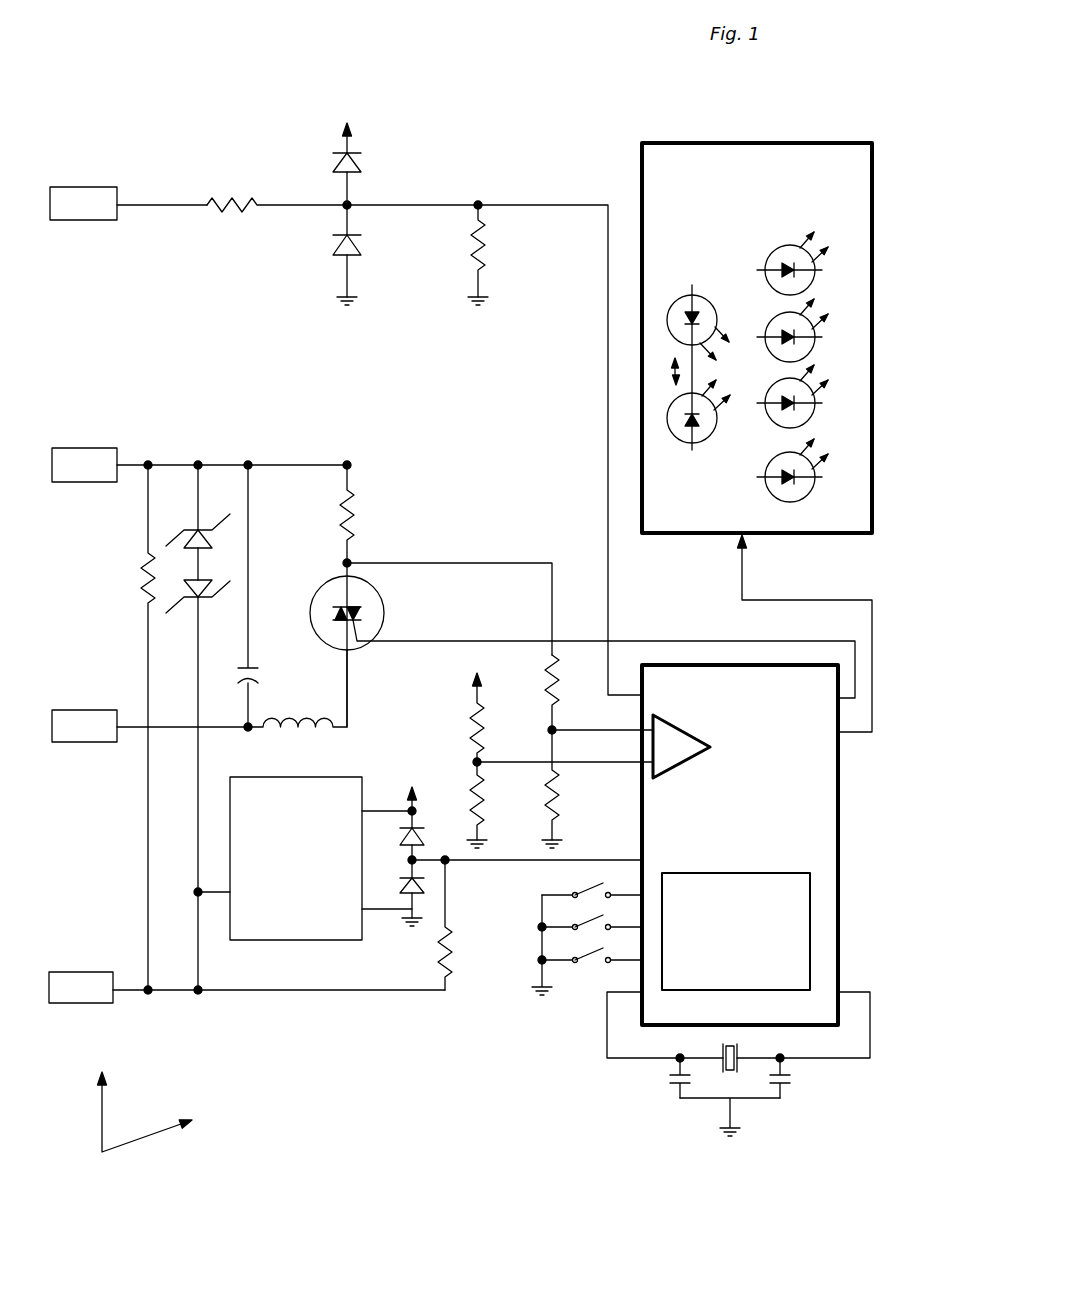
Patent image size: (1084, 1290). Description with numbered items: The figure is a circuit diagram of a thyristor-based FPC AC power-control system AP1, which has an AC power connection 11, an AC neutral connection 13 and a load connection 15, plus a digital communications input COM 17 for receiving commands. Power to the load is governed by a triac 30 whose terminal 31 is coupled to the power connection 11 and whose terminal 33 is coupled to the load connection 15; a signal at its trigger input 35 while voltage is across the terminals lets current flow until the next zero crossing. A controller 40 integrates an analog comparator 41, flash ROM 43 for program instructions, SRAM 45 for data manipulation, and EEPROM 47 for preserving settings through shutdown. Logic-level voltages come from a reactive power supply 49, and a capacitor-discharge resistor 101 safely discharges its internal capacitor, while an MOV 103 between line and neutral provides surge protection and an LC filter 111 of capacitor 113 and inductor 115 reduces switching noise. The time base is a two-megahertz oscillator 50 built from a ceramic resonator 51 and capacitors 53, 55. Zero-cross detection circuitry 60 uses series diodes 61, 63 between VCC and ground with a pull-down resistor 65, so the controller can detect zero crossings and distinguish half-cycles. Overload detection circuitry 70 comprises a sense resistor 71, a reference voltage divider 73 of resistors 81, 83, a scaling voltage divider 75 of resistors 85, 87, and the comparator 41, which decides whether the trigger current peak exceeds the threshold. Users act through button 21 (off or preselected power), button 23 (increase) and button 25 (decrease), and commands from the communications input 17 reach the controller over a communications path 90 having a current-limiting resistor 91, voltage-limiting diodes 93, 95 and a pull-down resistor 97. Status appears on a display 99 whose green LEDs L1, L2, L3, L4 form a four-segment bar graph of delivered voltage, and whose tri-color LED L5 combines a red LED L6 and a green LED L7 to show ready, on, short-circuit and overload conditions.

The digital communications input COM 17 is at (95, 216).
The communications path 90 is at (194, 225).
The current limiting resistor 91 is at (240, 192).
The voltage-limiting diode 93 is at (333, 249).
The voltage-limiting diode 95 is at (333, 166).
The pull-down resistor 97 is at (470, 256).
The display 99 is at (770, 201).
The green LED L1 is at (811, 490).
The green LED L2 is at (812, 419).
The green LED L3 is at (815, 352).
The green LED L4 is at (811, 289).
The tri-color LED L5 is at (662, 371).
The red LED L6 is at (700, 294).
The green LED L7 is at (714, 436).
The AC power connection 11 is at (96, 476).
The capacitor-discharge resistor 101 is at (140, 580).
The voltage-surge protection MOV 103 is at (180, 518).
The LC filter 111 is at (273, 678).
The capacitor 113 is at (246, 668).
The inductor 115 is at (278, 716).
The sense resistor 71 is at (340, 509).
The triac terminal 31 is at (343, 573).
The triac 30 is at (398, 606).
The triac terminal 33 is at (345, 651).
The trigger input 35 is at (380, 643).
The overload detection circuitry 70 is at (500, 515).
The load connection 15 is at (96, 738).
The AC neutral connection 13 is at (93, 999).
The reactive power supply 49 is at (308, 923).
The diode 61 is at (400, 837).
The diode 63 is at (400, 883).
The pull-down resistor 65 is at (440, 966).
The zero-cross detection circuitry 60 is at (458, 1010).
The resistor 83 is at (472, 706).
The resistor 81 is at (472, 798).
The resistor 87 is at (546, 680).
The resistor 85 is at (546, 795).
The reference voltage divider 73 is at (437, 736).
The scaling voltage divider 75 is at (582, 724).
The controller 40 is at (752, 845).
The analog comparator 41 is at (680, 756).
The flash ROM 43 is at (786, 915).
The SRAM 45 is at (780, 941).
The EEPROM 47 is at (797, 968).
The button 23 is at (578, 882).
The button 21 is at (578, 915).
The button 25 is at (578, 950).
The oscillator 50 is at (709, 1064).
The ceramic resonator 51 is at (735, 1046).
The capacitor 53 is at (676, 1087).
The capacitor 55 is at (783, 1086).
The FPC AC power-control system AP1 is at (126, 1124).